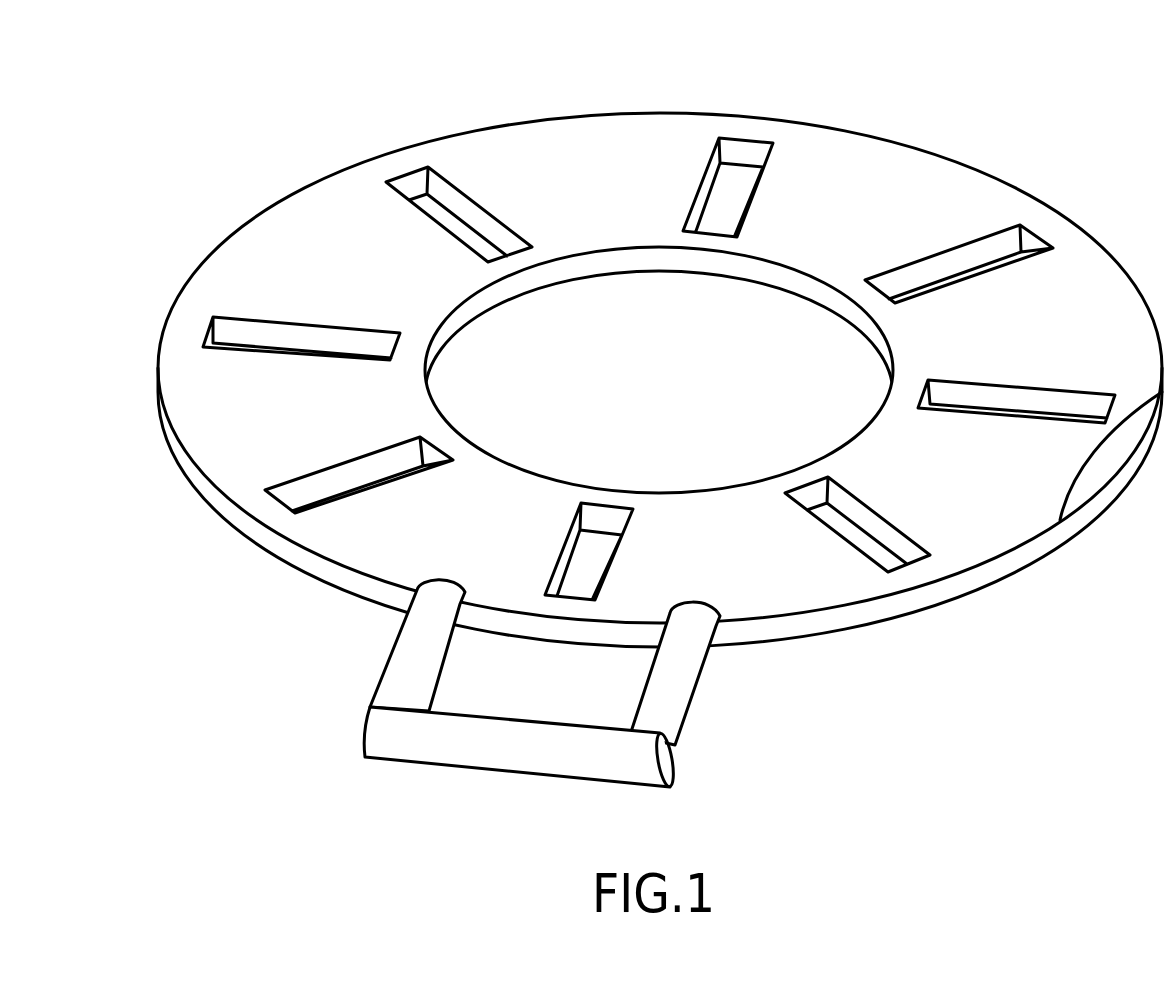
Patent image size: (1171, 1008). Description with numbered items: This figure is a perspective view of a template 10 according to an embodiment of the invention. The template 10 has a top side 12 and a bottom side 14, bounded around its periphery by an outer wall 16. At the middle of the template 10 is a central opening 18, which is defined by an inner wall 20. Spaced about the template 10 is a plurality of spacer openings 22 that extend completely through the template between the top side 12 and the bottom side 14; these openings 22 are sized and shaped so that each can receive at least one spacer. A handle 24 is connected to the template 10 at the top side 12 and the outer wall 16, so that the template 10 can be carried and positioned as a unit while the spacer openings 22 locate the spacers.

The template 10 is at (660, 439).
The top side 12 is at (586, 162).
The bottom side 14 is at (850, 632).
The outer wall 16 is at (997, 570).
The central opening 18 is at (790, 353).
The inner wall 20 is at (512, 287).
The spacer openings 22 is at (438, 208).
The handle 24 is at (592, 760).